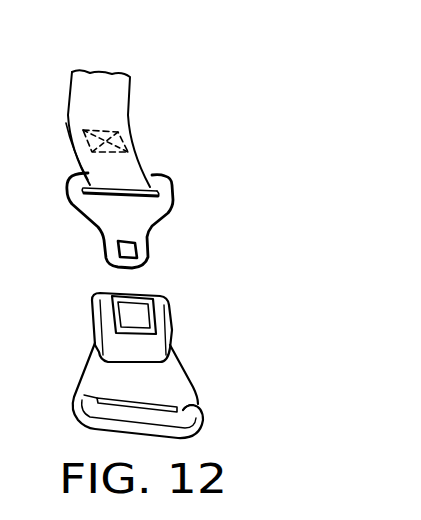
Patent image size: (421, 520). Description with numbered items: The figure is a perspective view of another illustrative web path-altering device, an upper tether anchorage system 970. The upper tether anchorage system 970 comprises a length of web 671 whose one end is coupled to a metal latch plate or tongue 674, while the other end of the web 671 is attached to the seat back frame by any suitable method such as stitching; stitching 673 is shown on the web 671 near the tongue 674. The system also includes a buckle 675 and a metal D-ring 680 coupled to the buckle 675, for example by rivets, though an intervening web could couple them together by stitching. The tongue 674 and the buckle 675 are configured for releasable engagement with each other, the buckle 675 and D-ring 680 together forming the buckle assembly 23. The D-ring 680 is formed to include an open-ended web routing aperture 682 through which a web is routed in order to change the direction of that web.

The upper tether anchorage system 970 is at (120, 63).
The web 671 is at (118, 105).
The stitching 673 is at (118, 143).
The tongue 674 is at (95, 208).
The buckle 23 is at (169, 271).
The buckle 675 is at (93, 318).
The D-ring 680 is at (92, 383).
The web routing aperture 682 is at (183, 407).